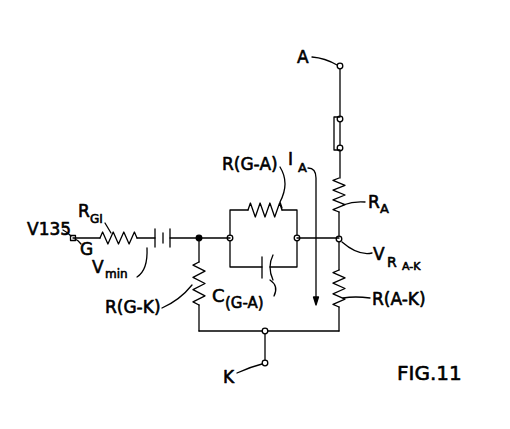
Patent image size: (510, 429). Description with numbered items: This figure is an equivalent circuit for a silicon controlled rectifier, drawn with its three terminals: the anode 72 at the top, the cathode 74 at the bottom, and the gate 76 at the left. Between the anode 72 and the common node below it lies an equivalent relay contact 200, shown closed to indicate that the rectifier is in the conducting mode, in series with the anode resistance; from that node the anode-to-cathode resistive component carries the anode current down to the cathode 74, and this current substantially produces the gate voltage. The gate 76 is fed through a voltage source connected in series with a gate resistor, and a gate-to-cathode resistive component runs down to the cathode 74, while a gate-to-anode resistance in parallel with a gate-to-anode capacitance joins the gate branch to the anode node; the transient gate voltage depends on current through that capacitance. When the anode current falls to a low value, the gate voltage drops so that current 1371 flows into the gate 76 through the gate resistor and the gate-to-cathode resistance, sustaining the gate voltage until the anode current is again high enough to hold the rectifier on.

The anode 72 is at (343, 64).
The cathode 74 is at (268, 364).
The gate terminal 76 is at (71, 240).
The equivalent relay contact 200 is at (344, 135).
The current 1371 is at (186, 249).